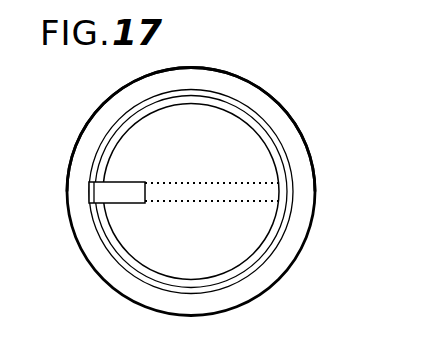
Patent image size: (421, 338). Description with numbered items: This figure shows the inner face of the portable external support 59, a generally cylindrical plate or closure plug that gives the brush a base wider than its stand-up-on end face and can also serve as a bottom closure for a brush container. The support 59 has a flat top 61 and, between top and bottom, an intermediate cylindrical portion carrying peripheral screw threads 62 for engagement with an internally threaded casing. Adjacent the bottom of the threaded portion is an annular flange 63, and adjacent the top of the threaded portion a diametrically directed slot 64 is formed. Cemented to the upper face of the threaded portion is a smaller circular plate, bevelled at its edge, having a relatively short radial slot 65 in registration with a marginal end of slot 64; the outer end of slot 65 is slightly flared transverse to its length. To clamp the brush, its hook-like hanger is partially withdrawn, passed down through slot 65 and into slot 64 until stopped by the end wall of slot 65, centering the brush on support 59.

The portable external support 59 is at (316, 229).
The flat top 61 is at (237, 157).
The peripheral screw threads 62 is at (123, 113).
The annular flange 63 is at (259, 85).
The diametrically directed slot 64 is at (249, 183).
The radial slot 65 is at (137, 203).